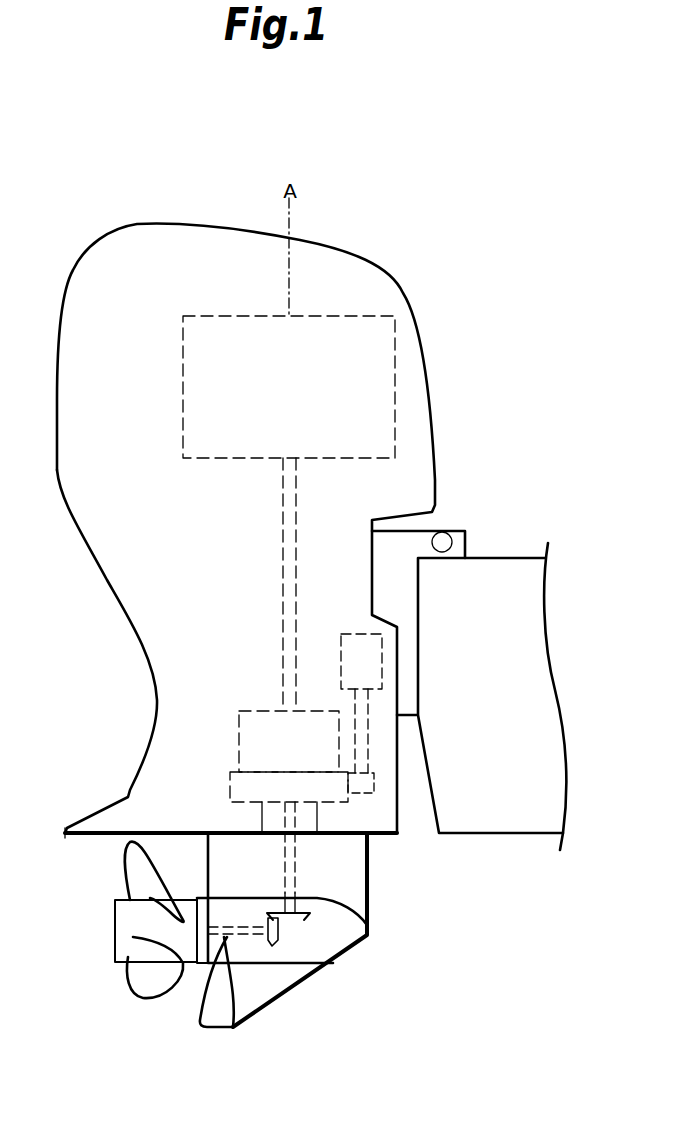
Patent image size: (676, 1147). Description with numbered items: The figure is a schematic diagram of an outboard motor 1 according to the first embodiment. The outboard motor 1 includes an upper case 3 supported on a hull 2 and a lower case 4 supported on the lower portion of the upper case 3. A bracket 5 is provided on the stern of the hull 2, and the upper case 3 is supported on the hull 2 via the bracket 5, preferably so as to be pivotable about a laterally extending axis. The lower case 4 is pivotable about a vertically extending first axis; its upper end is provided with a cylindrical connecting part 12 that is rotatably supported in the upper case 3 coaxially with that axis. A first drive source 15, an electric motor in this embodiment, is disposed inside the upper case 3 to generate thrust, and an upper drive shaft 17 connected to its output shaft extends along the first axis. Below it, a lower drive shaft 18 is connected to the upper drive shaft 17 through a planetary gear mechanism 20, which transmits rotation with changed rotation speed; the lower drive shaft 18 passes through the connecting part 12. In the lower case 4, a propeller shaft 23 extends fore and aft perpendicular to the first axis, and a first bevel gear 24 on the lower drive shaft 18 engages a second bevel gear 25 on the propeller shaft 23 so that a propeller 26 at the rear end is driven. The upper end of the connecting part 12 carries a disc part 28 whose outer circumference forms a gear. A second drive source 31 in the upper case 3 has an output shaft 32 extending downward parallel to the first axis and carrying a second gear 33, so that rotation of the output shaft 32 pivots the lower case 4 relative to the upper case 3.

The outboard motor 1 is at (470, 265).
The hull 2 is at (507, 565).
The upper case 3 is at (163, 235).
The lower case 4 is at (265, 995).
The bracket 5 is at (456, 531).
The connecting part 12 is at (262, 813).
The first drive source 15 is at (353, 316).
The upper drive shaft 17 is at (283, 525).
The lower drive shaft 18 is at (293, 872).
The planetary gear mechanism 20 is at (239, 722).
The propeller shaft 23 is at (238, 1028).
The first bevel gear 24 is at (307, 917).
The second bevel gear 25 is at (273, 942).
The propeller 26 is at (142, 990).
The disc part 28 is at (230, 782).
The second drive source 31 is at (358, 634).
The output shaft 32 is at (368, 750).
The second gear 33 is at (374, 782).